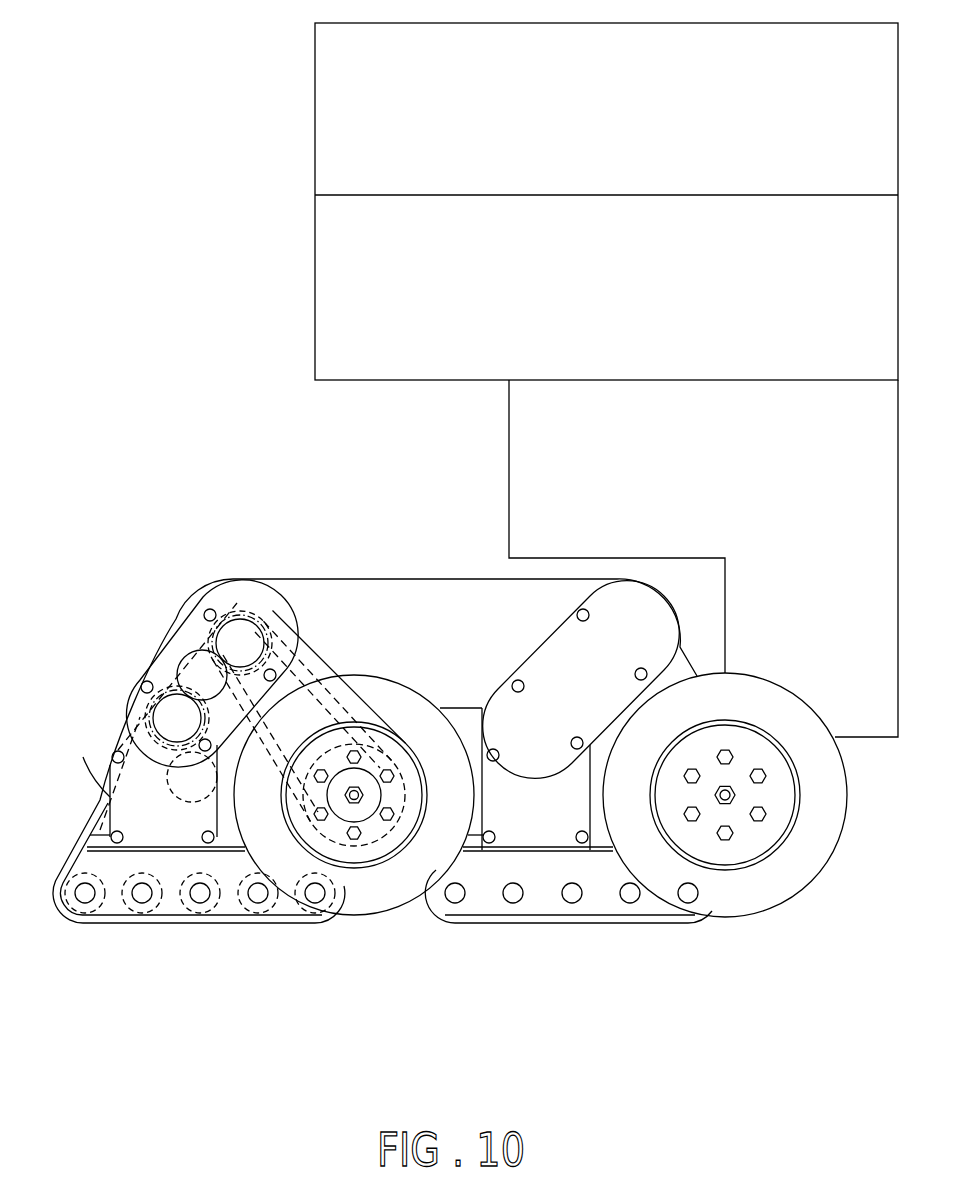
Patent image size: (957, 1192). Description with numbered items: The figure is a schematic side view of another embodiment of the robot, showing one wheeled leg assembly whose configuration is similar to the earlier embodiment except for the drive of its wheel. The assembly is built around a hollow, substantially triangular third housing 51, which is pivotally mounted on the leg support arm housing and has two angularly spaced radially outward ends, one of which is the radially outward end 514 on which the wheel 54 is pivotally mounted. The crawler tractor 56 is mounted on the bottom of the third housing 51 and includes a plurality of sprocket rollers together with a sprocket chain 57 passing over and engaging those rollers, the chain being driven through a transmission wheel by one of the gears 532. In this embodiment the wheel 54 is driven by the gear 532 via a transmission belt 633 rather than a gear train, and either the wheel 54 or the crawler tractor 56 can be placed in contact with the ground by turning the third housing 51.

The third housing 51 is at (158, 657).
The gear 532 is at (252, 620).
The transmission belt 633 is at (325, 698).
The sprocket chain 57 is at (98, 793).
The crawler tractor 56 is at (198, 918).
The wheel 54 is at (356, 830).
The radially outward end 514 is at (396, 862).